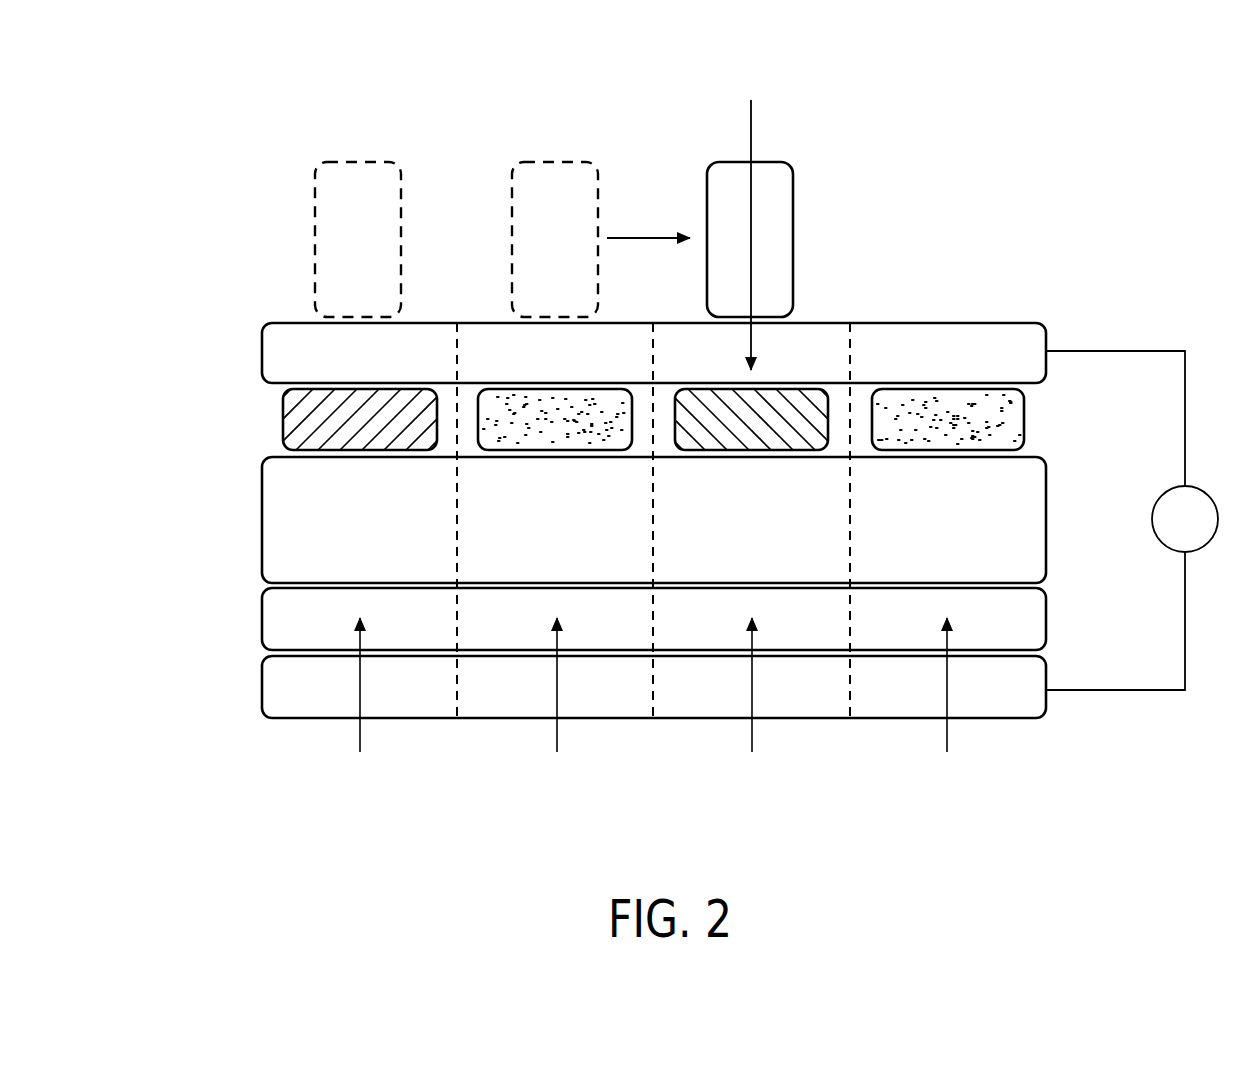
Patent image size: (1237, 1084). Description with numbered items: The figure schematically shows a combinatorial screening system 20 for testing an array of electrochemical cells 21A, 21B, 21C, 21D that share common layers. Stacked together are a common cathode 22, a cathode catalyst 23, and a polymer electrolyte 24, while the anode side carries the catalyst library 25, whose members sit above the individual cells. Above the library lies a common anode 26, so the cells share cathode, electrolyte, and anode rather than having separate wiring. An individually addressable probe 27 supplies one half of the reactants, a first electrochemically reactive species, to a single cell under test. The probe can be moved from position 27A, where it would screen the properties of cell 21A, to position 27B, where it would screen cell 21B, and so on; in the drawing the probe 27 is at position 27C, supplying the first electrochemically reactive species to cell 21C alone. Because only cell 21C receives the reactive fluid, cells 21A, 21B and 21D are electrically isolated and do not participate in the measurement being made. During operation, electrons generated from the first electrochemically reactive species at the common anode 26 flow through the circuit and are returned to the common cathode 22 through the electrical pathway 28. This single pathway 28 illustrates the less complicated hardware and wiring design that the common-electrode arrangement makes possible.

The combinatorial screening system 20 is at (452, 797).
The electrochemical cell 21A is at (385, 539).
The electrochemical cell 21B is at (579, 539).
The electrochemical cell 21C is at (774, 539).
The electrochemical cell 21D is at (970, 539).
The common cathode 22 is at (262, 686).
The cathode catalyst 23 is at (262, 621).
The polymer electrolyte 24 is at (262, 520).
The catalyst library 25 is at (283, 418).
The common anode 26 is at (262, 353).
The individually addressable probe 27 is at (262, 162).
The probe position 27A is at (362, 158).
The probe position 27B is at (555, 158).
The probe position 27C is at (793, 238).
The electrical pathway 28 is at (1112, 351).